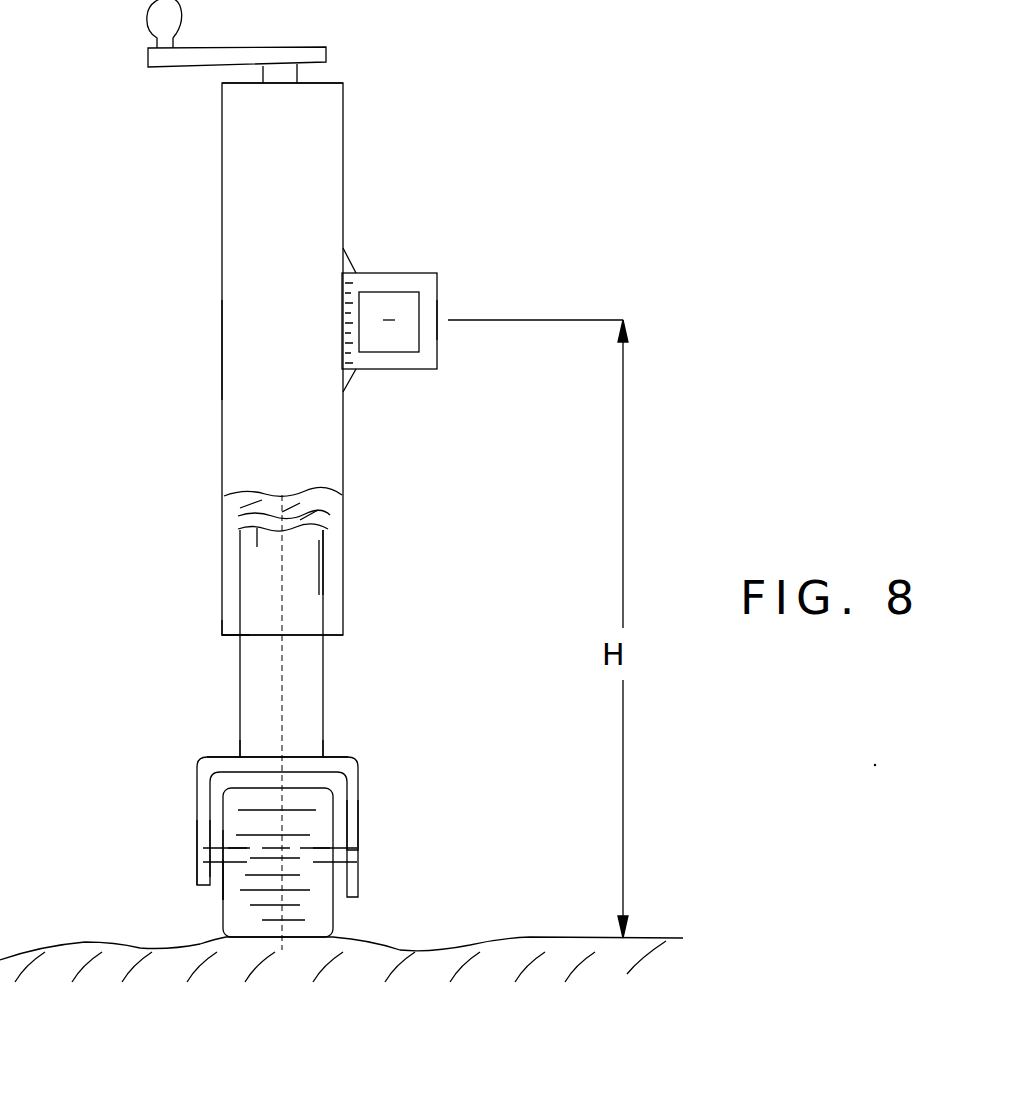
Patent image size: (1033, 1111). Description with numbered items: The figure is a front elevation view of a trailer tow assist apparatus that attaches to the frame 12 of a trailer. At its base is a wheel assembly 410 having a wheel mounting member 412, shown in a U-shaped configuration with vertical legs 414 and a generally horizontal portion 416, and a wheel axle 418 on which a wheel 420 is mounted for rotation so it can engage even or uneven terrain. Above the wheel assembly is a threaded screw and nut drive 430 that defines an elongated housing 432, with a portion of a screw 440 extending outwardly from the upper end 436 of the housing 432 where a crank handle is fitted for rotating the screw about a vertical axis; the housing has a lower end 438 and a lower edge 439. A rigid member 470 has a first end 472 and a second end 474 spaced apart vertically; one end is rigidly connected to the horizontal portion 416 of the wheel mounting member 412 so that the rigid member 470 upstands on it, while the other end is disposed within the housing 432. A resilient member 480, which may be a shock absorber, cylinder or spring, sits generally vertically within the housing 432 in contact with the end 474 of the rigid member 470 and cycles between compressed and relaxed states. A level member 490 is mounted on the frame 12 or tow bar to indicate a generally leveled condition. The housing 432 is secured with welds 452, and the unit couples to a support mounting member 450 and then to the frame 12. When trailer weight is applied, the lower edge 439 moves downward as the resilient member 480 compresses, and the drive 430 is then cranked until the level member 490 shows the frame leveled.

The frame 12 is at (437, 310).
The wheel assembly 410 is at (474, 819).
The wheel mounting member 412 is at (183, 877).
The vertical legs 414 is at (197, 850).
The horizontal portion 416 is at (345, 760).
The wheel axle 418 is at (223, 880).
The wheel 420 is at (315, 915).
The threaded screw and nut drive 430 is at (218, 215).
The housing 432 is at (222, 341).
The housing top 436 is at (343, 127).
The housing bottom 438 is at (308, 616).
The lower edge 439 is at (256, 645).
The screw 440 is at (274, 73).
The support mounting member 450 is at (562, 184).
The welds 452 is at (347, 260).
The rigid member 470 is at (302, 678).
The first end 472 is at (258, 757).
The second end 474 is at (257, 547).
The resilient member 480 is at (268, 514).
The level member 490 is at (388, 272).